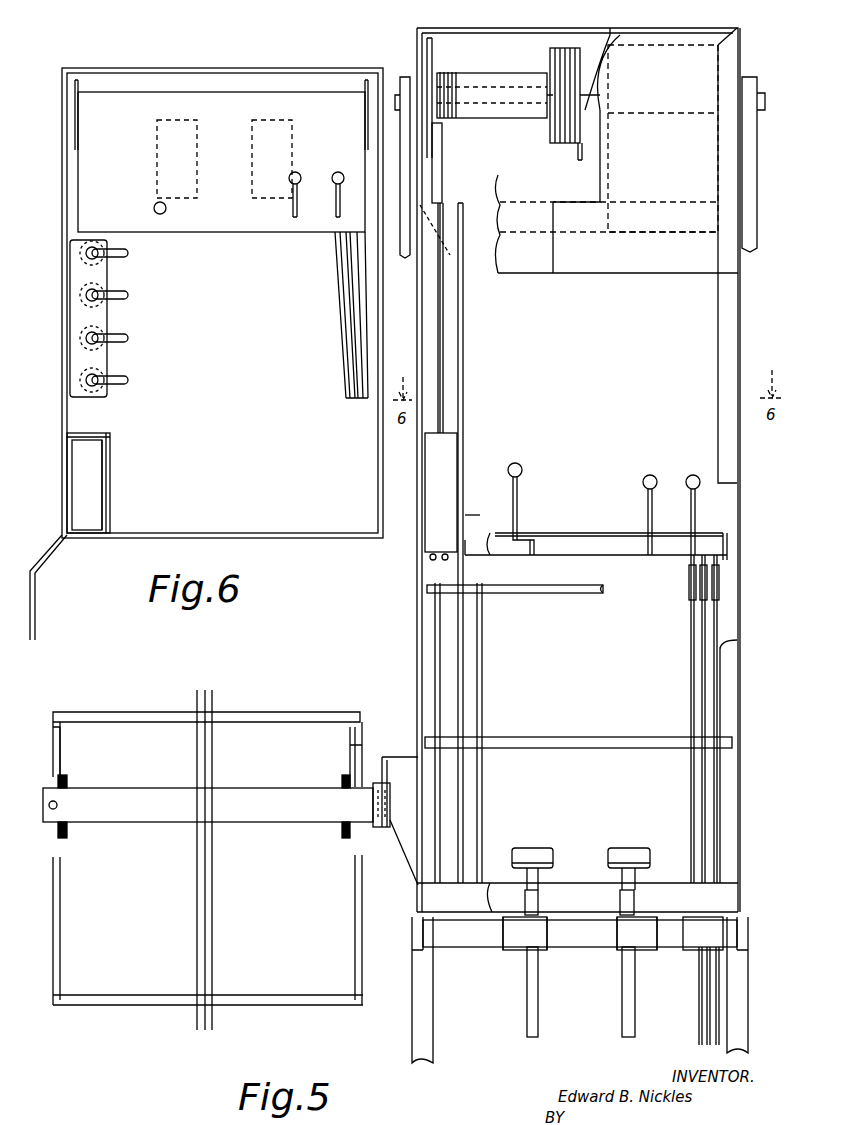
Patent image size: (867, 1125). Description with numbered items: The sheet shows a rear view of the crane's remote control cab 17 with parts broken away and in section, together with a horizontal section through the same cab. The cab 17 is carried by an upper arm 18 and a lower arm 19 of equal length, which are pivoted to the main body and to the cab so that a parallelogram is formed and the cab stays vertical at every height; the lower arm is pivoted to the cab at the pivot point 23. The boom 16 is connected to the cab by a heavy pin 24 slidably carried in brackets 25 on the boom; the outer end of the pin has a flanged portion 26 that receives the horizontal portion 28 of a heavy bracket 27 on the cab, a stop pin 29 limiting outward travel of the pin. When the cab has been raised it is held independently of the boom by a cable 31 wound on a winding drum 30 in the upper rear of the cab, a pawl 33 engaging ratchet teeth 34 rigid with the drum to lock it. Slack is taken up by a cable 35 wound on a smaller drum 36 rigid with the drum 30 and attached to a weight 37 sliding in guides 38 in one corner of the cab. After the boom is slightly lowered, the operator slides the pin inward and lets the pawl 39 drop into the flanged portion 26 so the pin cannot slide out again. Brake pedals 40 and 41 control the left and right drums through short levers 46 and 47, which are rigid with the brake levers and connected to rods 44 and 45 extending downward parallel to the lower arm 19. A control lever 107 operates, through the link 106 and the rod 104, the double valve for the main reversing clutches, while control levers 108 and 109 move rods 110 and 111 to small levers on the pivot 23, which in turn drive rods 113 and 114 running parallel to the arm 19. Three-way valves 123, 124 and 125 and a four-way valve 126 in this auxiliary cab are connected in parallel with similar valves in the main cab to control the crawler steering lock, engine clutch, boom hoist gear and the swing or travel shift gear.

In FIG. 5, the pivoted boom 16 is at (280, 704).
In FIG. 6, the control cab 17 is at (320, 540).
In FIG. 5, the control cab 17 is at (740, 470).
In FIG. 5, the upper arm 18 is at (408, 262).
In FIG. 5, the lower arm 19 is at (428, 1040).
In FIG. 5, the pivot point 23 is at (458, 947).
In FIG. 5, the pin 24 is at (240, 830).
In FIG. 5, the brackets 25 is at (68, 778).
In FIG. 5, the grooved or flanged portion 26 is at (372, 804).
In FIG. 6, the bracket 27 is at (42, 553).
In FIG. 5, the bracket 27 is at (400, 755).
In FIG. 5, the horizontal portion 28 is at (388, 795).
In FIG. 5, the stop pin 29 is at (57, 805).
In FIG. 5, the winding drum 30 is at (590, 62).
In FIG. 5, the cable 31 is at (580, 160).
In FIG. 5, the pawl 33 is at (428, 185).
In FIG. 5, the ratchet teeth 34 is at (434, 60).
In FIG. 6, the cable 35 is at (88, 478).
In FIG. 5, the cable 35 is at (444, 395).
In FIG. 5, the smaller drum 36 is at (492, 120).
In FIG. 6, the weight 37 is at (98, 506).
In FIG. 5, the weight 37 is at (442, 462).
In FIG. 6, the guides 38 is at (112, 478).
In FIG. 5, the guides 38 is at (465, 328).
In FIG. 5, the pawl 39 is at (350, 770).
In FIG. 6, the brake pedal 40 is at (253, 160).
In FIG. 5, the brake pedal 40 is at (630, 848).
In FIG. 6, the brake pedal 41 is at (158, 166).
In FIG. 5, the brake pedal 41 is at (522, 850).
In FIG. 5, the rod 44 is at (622, 982).
In FIG. 5, the rod 45 is at (526, 990).
In FIG. 5, the short lever 46 is at (636, 898).
In FIG. 5, the short lever 47 is at (540, 900).
In FIG. 5, the rod 104 is at (716, 1025).
In FIG. 6, the link 106 is at (362, 310).
In FIG. 5, the link 106 is at (712, 698).
In FIG. 6, the control lever 107 is at (154, 208).
In FIG. 5, the control lever 107 is at (530, 452).
In FIG. 6, the control lever 108 is at (338, 172).
In FIG. 5, the control lever 108 is at (690, 476).
In FIG. 6, the control lever 109 is at (290, 184).
In FIG. 5, the control lever 109 is at (640, 482).
In FIG. 6, the rod 110 is at (338, 268).
In FIG. 5, the rod 110 is at (690, 648).
In FIG. 6, the rod 111 is at (349, 290).
In FIG. 5, the rod 111 is at (700, 676).
In FIG. 5, the rod 113 is at (698, 995).
In FIG. 5, the rod 114 is at (706, 1010).
In FIG. 6, the three-way valve 123 is at (104, 262).
In FIG. 6, the three-way valve 124 is at (104, 304).
In FIG. 6, the three-way valve 125 is at (104, 347).
In FIG. 6, the four-way valve 126 is at (104, 389).